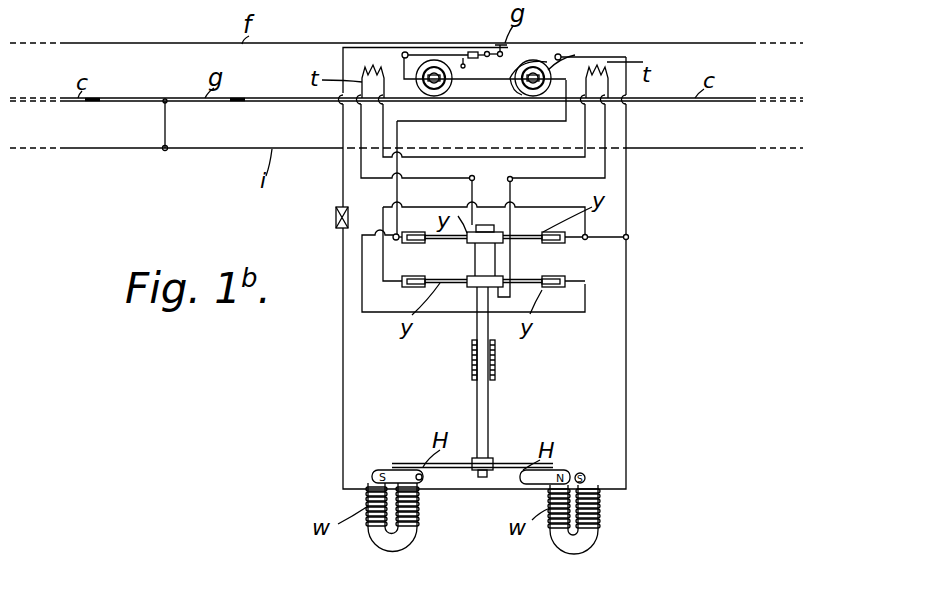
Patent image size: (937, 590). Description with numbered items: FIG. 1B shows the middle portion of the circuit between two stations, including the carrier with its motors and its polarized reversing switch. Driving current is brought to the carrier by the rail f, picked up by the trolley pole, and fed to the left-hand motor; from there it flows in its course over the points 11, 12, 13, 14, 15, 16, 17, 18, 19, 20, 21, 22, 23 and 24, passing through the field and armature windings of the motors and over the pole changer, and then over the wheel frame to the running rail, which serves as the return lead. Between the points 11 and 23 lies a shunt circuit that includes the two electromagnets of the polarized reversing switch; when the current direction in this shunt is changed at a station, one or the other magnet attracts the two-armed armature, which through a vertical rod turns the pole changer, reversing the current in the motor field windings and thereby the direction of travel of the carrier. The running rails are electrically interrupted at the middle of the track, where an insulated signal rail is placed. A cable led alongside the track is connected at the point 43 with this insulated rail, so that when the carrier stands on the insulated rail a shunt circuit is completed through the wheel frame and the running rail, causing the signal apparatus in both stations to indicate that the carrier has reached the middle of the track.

The circuit point 11 is at (406, 52).
The circuit point 12 is at (438, 62).
The circuit point 13 is at (440, 64).
The circuit point 14 is at (547, 62).
The circuit point 15 is at (561, 55).
The circuit point 16 is at (395, 241).
The circuit point 17 is at (560, 277).
The circuit point 18 is at (490, 290).
The circuit point 19 is at (513, 181).
The circuit point 20 is at (470, 180).
The circuit point 21 is at (470, 242).
The circuit point 22 is at (556, 244).
The circuit point 23 is at (629, 237).
The circuit point 24 is at (575, 55).
The cable connection point 43 is at (164, 151).